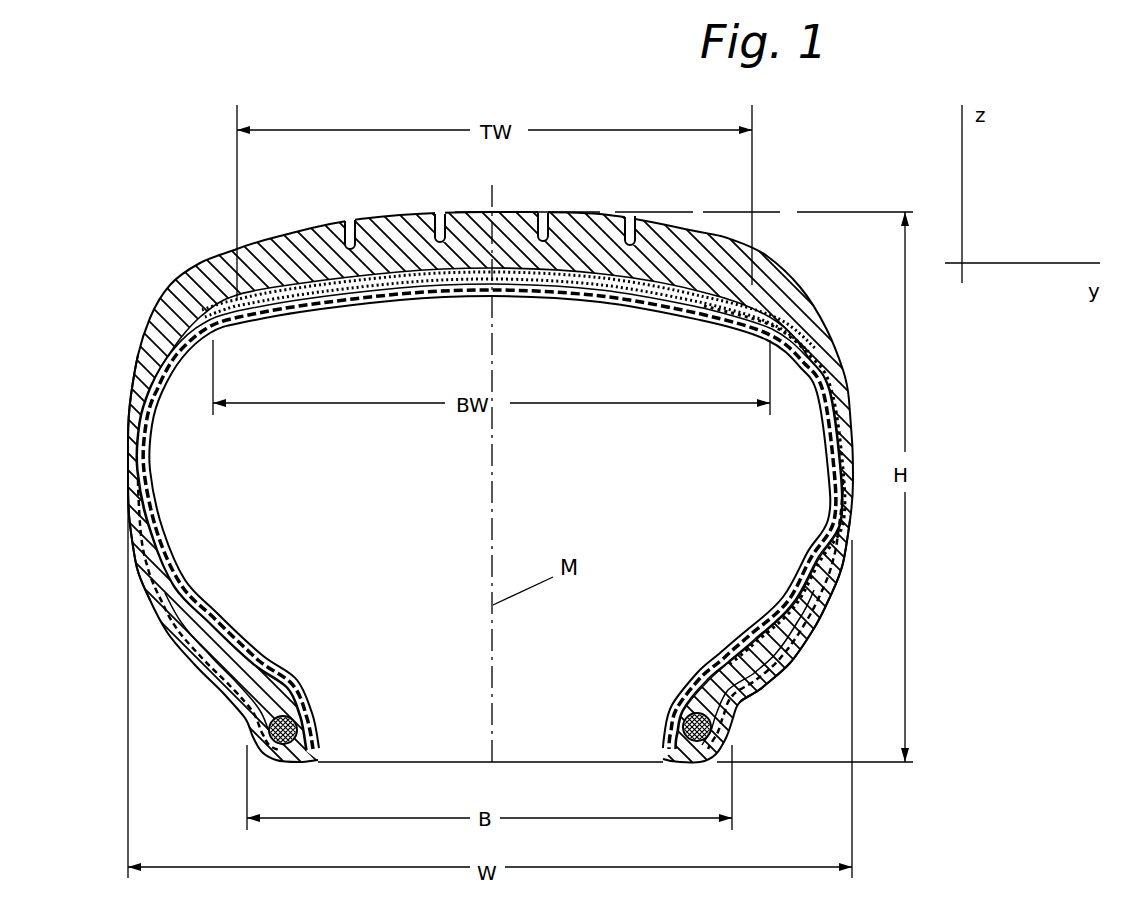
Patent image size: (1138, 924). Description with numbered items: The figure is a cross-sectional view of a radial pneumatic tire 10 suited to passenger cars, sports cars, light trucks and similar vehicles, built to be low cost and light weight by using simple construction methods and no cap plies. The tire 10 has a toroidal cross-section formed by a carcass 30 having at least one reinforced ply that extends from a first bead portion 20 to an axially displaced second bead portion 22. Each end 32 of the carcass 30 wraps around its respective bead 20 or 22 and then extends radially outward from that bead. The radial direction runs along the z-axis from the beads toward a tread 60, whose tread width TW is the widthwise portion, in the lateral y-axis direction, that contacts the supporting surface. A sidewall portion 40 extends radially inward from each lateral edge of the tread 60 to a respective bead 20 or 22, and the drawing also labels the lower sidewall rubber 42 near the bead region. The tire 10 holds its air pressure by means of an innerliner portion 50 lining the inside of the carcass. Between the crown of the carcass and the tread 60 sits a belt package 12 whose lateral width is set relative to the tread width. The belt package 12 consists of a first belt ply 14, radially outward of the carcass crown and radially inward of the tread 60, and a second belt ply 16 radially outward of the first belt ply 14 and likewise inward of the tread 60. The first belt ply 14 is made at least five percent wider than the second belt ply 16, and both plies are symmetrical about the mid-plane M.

The tire 10 is at (146, 212).
The belt package 12 is at (397, 263).
The first belt ply 14 is at (543, 290).
The second belt ply 16 is at (593, 268).
The first bead portion 20 is at (270, 733).
The second bead portion 22 is at (718, 735).
The carcass 30 is at (172, 568).
The carcass end 32 is at (192, 622).
The sidewall portion 40 is at (128, 463).
The sidewall rubber 42 is at (807, 633).
The innerliner portion 50 is at (830, 458).
The tread 60 is at (318, 245).